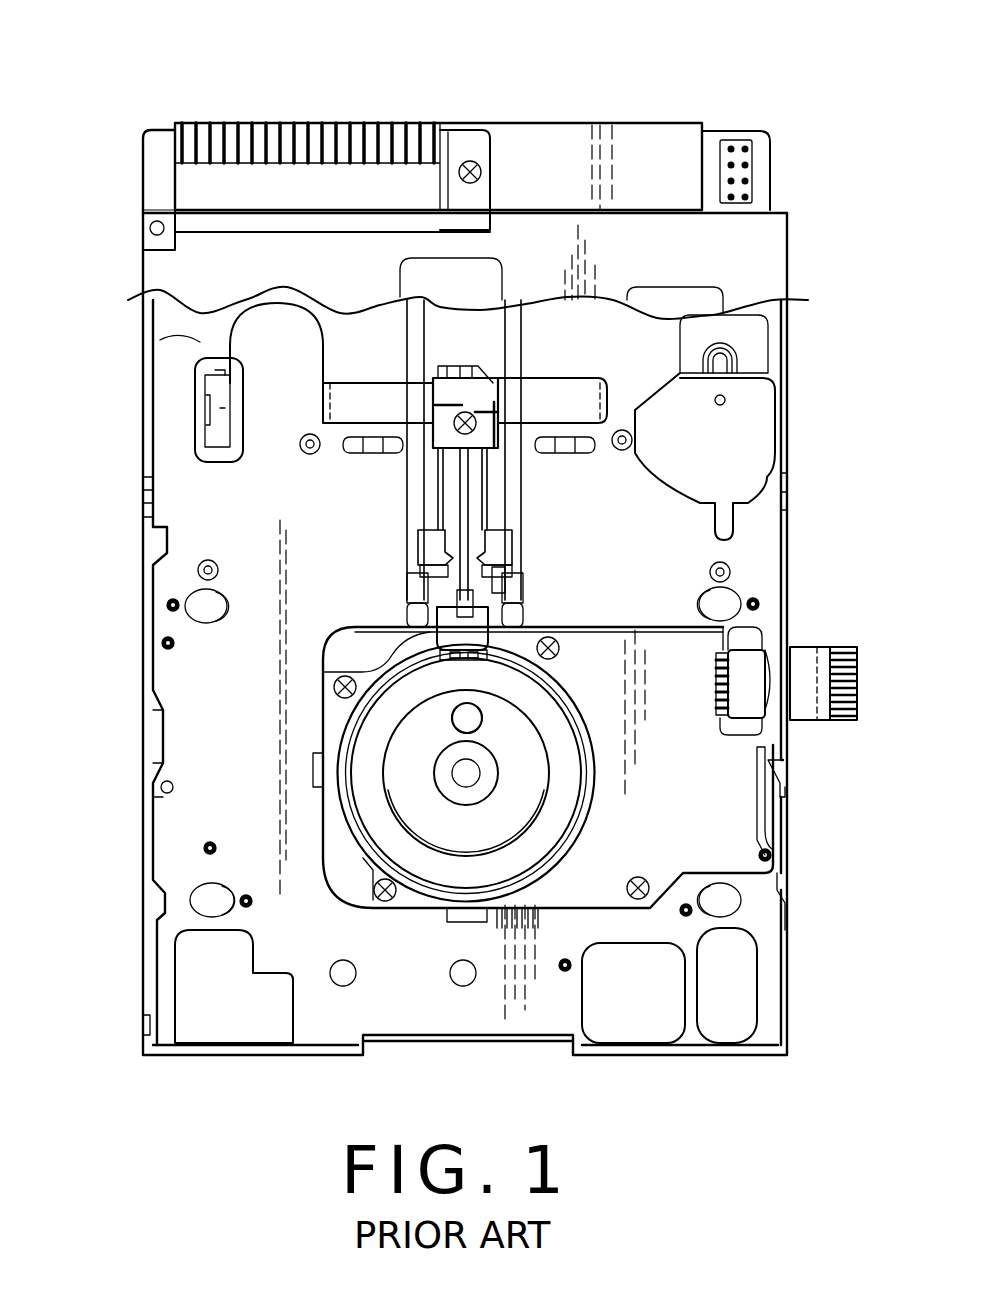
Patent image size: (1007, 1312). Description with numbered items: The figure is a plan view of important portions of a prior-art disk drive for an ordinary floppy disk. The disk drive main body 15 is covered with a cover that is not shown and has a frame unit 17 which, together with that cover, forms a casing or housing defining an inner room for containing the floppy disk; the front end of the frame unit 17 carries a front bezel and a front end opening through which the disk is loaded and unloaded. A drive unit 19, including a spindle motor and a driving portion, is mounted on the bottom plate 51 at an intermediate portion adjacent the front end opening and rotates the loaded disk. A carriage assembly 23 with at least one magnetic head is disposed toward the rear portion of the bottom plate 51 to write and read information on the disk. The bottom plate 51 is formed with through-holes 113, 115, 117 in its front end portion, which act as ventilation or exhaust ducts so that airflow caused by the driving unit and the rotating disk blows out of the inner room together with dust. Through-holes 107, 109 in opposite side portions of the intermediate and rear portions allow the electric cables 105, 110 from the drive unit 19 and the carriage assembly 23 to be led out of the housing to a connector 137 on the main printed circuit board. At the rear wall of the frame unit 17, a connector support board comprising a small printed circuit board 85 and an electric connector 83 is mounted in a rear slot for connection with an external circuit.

The disk drive main body 15 is at (625, 90).
The frame unit 17 is at (790, 957).
The drive unit 19 is at (327, 720).
The carriage assembly 23 is at (490, 500).
The bottom plate 51 is at (200, 343).
The electric connector 83 is at (174, 160).
The small printed circuit board 85 is at (143, 165).
The electric cable 105 is at (812, 650).
The through-hole 107 is at (762, 630).
The through-hole 109 is at (200, 410).
The electric cable 110 is at (293, 313).
The through-hole 113 is at (218, 1043).
The through-hole 115 is at (637, 1043).
The through-hole 117 is at (732, 1043).
The connector 137 is at (232, 410).